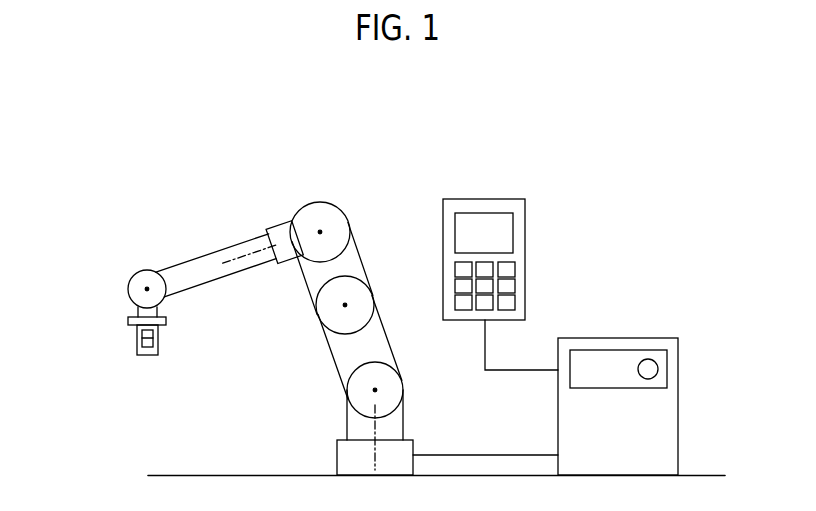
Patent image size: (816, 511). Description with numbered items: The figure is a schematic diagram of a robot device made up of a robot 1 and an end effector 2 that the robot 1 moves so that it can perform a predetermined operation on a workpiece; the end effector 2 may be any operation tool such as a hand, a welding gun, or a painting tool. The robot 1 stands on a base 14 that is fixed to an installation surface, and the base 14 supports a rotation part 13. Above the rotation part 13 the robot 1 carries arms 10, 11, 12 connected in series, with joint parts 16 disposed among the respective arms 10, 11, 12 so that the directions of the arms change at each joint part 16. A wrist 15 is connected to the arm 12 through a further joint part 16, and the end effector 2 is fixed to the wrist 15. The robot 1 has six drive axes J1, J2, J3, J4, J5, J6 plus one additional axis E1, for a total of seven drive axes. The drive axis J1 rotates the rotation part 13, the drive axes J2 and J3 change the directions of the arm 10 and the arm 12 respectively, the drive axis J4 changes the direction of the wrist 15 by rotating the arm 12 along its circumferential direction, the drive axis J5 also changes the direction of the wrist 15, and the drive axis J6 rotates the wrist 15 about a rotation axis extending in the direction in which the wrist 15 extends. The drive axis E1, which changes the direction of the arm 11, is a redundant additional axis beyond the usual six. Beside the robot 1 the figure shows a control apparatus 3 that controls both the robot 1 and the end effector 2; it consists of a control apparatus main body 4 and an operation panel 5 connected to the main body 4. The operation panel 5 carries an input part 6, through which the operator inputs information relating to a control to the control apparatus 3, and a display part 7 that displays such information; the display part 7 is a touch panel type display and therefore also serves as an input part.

The robot 1 is at (268, 303).
The end effector 2 is at (157, 345).
The control apparatus 3 is at (571, 377).
The control apparatus main body 4 is at (655, 432).
The operation panel 5 is at (521, 255).
The input part 6 is at (508, 302).
The display part 7 is at (505, 233).
The arm 10 is at (378, 343).
The arm 11 is at (355, 264).
The arm 12 is at (175, 274).
The rotation part 13 is at (358, 429).
The base 14 is at (348, 462).
The wrist 15 is at (157, 310).
The joint part 16 is at (360, 395).
The drive axis J1 is at (378, 426).
The drive axis J2 is at (376, 390).
The drive axis J3 is at (321, 232).
The drive axis J4 is at (251, 250).
The drive axis J5 is at (147, 289).
The drive axis J6 is at (140, 308).
The drive axis E1 is at (346, 305).